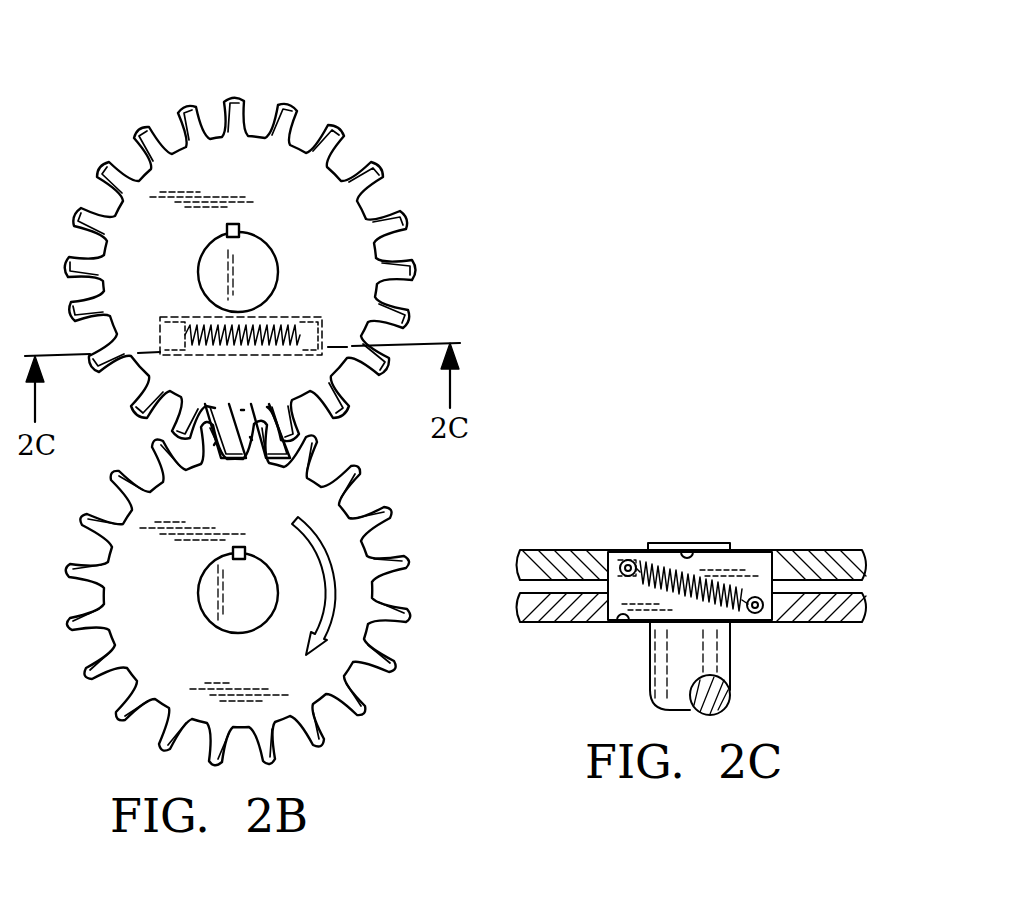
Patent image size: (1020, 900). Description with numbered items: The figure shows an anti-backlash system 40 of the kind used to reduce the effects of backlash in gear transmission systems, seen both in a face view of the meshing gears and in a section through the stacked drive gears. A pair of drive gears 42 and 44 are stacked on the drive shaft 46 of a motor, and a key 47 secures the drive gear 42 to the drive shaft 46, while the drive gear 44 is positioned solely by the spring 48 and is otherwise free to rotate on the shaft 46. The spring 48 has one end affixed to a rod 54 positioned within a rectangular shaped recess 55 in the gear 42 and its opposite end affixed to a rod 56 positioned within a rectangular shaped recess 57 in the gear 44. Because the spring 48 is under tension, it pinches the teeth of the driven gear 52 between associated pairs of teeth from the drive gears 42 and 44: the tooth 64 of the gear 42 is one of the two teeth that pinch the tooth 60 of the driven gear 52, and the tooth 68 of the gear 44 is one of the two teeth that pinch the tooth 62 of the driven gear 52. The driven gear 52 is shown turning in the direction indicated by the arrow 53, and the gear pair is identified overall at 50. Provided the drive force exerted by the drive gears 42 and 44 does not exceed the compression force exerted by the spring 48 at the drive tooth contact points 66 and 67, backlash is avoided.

In FIG. 2B, the anti-backlash system 40 is at (408, 248).
In FIG. 2C, the anti-backlash system 40 is at (774, 503).
In FIG. 2B, the drive gear 42 is at (229, 97).
In FIG. 2C, the drive gear 42 is at (852, 551).
In FIG. 2B, the drive gear 44 is at (143, 118).
In FIG. 2C, the drive gear 44 is at (856, 623).
In FIG. 2B, the drive shaft 46 is at (262, 278).
In FIG. 2C, the drive shaft 46 is at (673, 690).
In FIG. 2B, the key 47 is at (241, 228).
In FIG. 2B, the spring 48 is at (185, 333).
In FIG. 2C, the spring 48 is at (705, 578).
In FIG. 2B, the gear assembly 50 is at (505, 315).
In FIG. 2B, the driven gear 52 is at (355, 553).
In FIG. 2B, the rotation direction arrow 53 is at (333, 580).
In FIG. 2C, the rod 54 is at (628, 560).
In FIG. 2C, the rectangular shaped recess 55 is at (684, 549).
In FIG. 2C, the rod 56 is at (758, 613).
In FIG. 2C, the rectangular shaped recess 57 is at (622, 621).
In FIG. 2B, the tooth 60 is at (256, 452).
In FIG. 2B, the tooth 62 is at (215, 452).
In FIG. 2B, the tooth 64 is at (250, 415).
In FIG. 2B, the drive tooth contact point 66 is at (250, 437).
In FIG. 2B, the drive tooth contact point 67 is at (216, 442).
In FIG. 2B, the tooth 68 is at (214, 405).